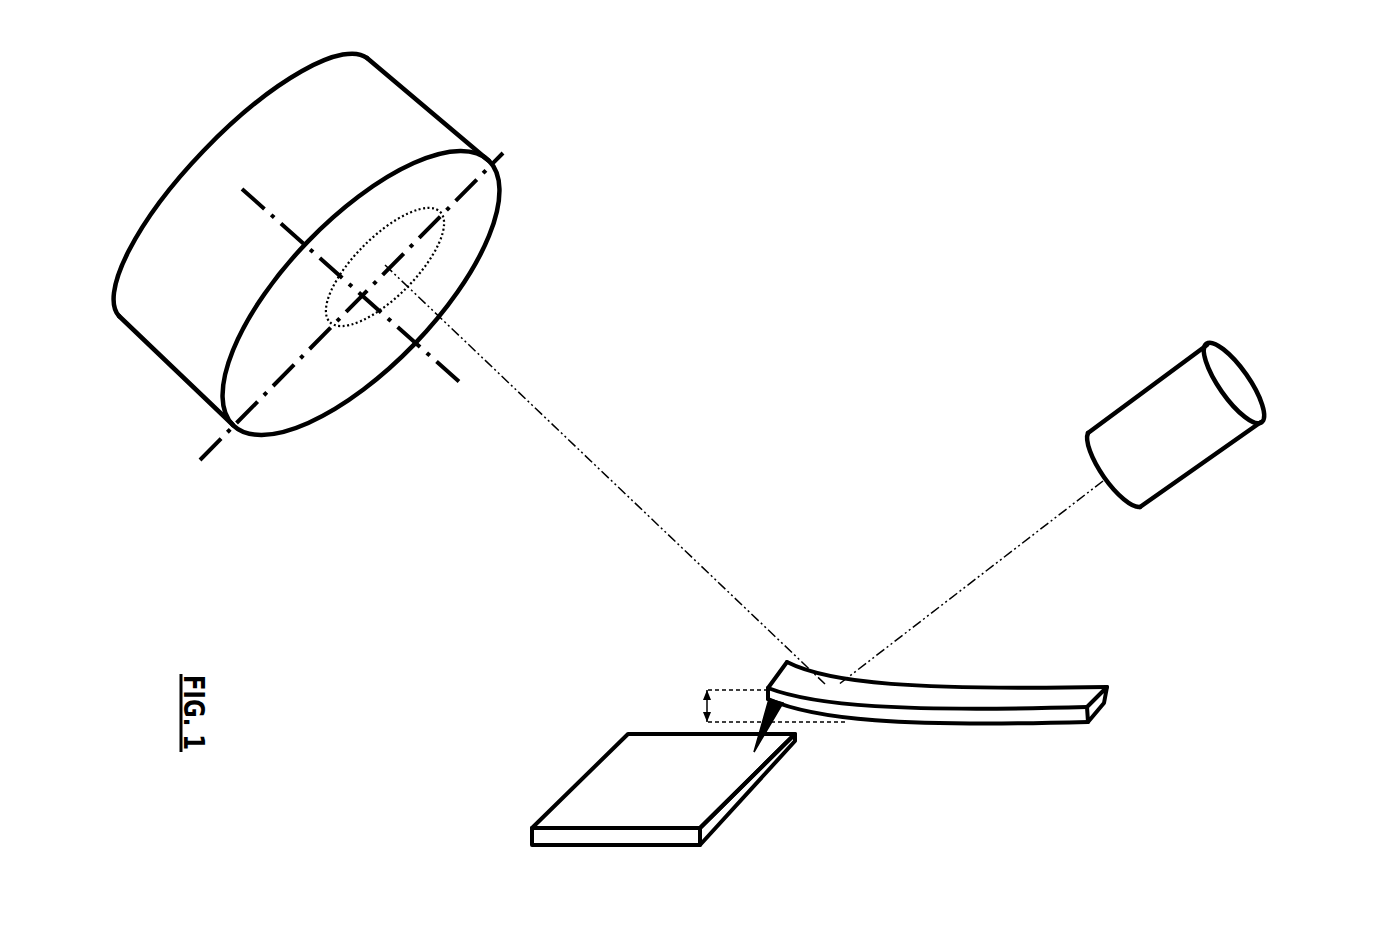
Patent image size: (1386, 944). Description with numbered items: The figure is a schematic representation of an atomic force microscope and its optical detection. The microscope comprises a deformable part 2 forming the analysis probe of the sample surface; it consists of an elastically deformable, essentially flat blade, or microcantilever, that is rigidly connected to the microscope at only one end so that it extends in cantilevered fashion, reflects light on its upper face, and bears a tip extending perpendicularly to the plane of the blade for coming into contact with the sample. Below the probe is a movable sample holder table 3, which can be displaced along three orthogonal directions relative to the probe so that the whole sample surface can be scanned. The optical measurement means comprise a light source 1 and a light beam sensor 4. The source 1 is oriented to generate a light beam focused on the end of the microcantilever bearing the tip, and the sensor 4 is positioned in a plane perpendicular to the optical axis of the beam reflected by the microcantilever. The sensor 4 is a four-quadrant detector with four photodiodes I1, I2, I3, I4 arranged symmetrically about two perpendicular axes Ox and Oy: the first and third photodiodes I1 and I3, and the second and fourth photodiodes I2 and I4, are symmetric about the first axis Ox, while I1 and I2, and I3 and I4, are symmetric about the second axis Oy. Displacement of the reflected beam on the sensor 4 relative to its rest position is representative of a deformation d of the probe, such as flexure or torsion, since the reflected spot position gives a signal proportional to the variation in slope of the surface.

The light source 1 is at (1232, 443).
The deformable part 2 is at (1043, 687).
The movable sample holder table 3 is at (703, 822).
The light beam sensor 4 is at (490, 208).
The deformation d is at (758, 705).
The first photodiode I1 is at (380, 215).
The second photodiode I2 is at (433, 279).
The third photodiode I3 is at (288, 322).
The fourth photodiode I4 is at (348, 372).
The first axis Ox is at (266, 162).
The second axis Oy is at (226, 489).